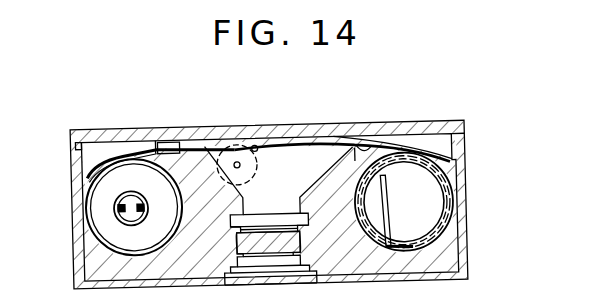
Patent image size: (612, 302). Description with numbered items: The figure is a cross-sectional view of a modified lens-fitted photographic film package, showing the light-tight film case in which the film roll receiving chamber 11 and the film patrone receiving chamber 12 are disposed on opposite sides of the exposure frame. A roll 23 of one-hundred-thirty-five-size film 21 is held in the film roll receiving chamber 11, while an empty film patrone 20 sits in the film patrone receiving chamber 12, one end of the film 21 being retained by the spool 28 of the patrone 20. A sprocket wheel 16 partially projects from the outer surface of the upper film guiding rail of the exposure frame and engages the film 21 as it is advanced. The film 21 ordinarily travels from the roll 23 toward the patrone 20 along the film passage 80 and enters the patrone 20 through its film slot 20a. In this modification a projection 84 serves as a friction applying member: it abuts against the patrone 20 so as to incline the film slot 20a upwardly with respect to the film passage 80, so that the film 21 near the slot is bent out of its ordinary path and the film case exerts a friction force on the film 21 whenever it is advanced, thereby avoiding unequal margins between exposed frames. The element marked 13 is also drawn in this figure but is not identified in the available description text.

The film roll receiving chamber 11 is at (448, 167).
The film patrone receiving chamber 12 is at (390, 147).
The spring retainer bead 13 is at (372, 147).
The sprocket wheel 16 is at (230, 147).
The film patrone 20 is at (88, 203).
The film slot 20a is at (155, 147).
The film 21 is at (302, 150).
The roll 23 is at (449, 207).
The spool 28 is at (120, 213).
The film passage 80 is at (255, 147).
The projection 84 is at (172, 150).